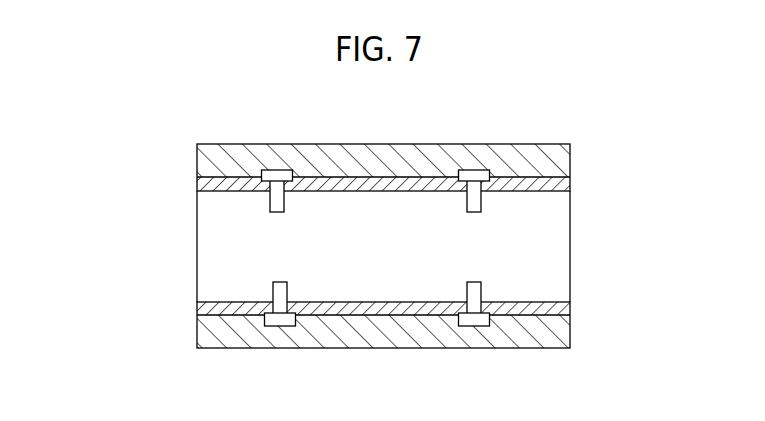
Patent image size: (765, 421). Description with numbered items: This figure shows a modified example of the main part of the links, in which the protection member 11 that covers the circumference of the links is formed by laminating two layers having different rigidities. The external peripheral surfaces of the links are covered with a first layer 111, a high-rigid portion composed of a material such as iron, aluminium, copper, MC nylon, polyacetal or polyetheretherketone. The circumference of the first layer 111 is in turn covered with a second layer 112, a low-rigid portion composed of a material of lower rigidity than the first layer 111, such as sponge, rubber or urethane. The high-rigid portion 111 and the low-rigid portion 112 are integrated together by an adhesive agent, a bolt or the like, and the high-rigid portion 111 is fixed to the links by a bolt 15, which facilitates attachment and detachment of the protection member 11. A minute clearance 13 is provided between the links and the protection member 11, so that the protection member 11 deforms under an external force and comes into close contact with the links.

The protection member 11 is at (105, 140).
The minute clearance 13 is at (349, 309).
The second layer (low-rigid portion) 112 is at (206, 150).
The first layer (high-rigid portion) 111 is at (208, 207).
The bolt 15 is at (287, 167).